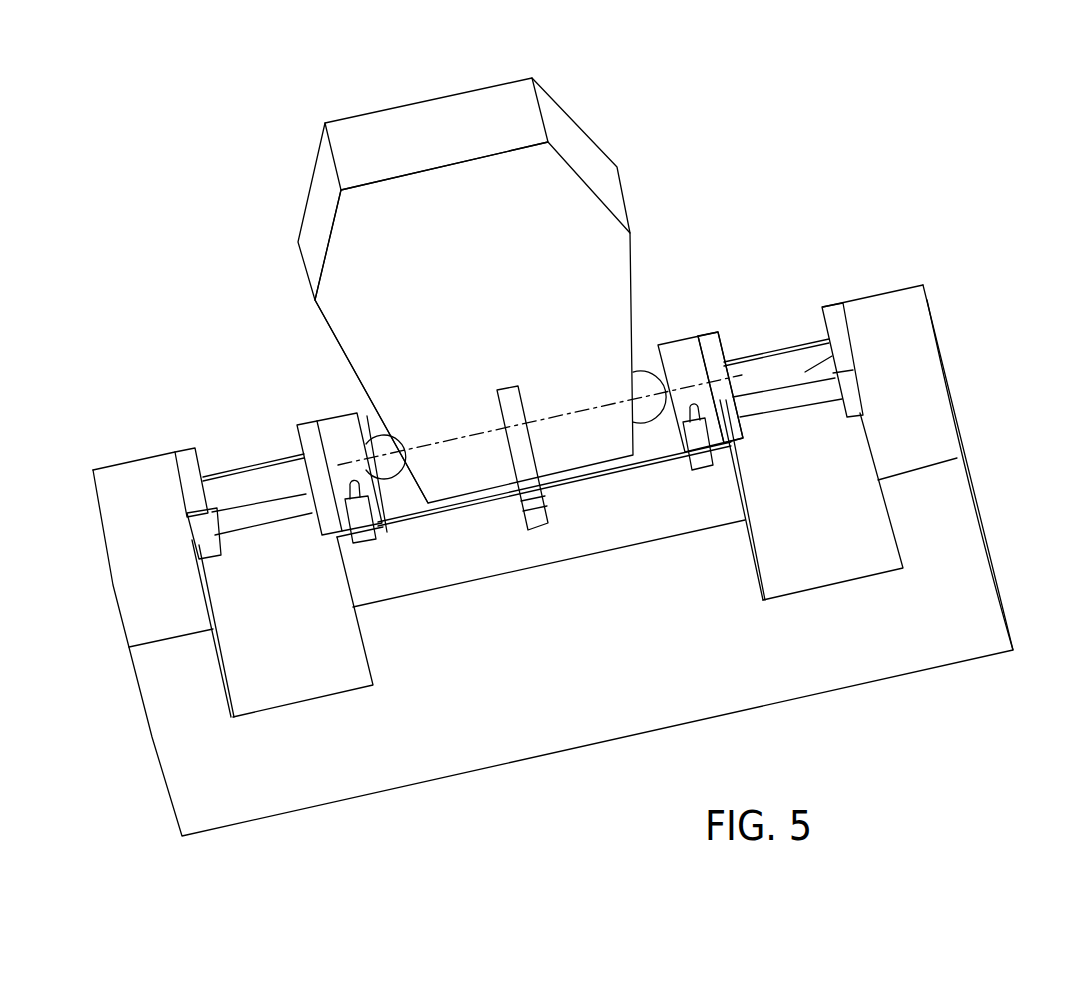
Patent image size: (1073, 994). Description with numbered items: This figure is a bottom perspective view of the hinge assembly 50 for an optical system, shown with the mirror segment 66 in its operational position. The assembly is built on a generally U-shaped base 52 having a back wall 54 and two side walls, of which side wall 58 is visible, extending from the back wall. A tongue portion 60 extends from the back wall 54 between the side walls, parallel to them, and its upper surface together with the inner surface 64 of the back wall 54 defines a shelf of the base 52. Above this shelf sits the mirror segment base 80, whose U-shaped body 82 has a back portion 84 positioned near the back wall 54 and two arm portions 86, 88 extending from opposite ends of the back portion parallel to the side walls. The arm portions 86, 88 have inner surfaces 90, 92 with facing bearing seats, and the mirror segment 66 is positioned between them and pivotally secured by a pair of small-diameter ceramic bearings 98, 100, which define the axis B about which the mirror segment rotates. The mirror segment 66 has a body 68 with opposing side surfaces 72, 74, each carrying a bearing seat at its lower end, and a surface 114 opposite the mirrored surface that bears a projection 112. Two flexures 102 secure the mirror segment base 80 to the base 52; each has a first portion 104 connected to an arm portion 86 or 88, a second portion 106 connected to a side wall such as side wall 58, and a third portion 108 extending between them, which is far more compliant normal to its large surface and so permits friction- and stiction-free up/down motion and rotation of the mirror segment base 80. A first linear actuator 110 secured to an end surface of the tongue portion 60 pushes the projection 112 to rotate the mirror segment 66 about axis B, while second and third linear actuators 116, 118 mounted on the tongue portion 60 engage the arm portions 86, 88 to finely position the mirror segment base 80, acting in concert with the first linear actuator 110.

The hinge assembly 50 is at (758, 184).
The base 52 is at (283, 817).
The back wall 54 is at (128, 545).
The side wall 58 is at (907, 427).
The tongue portion 60 is at (477, 555).
The inner surface 64 is at (278, 645).
The mirror segment 66 is at (533, 76).
The body 68 is at (365, 225).
The side surface 72 is at (328, 328).
The side surface 74 is at (632, 251).
The mirror segment base 80 is at (668, 343).
The U-shaped body 82 is at (652, 440).
The back portion 84 is at (412, 503).
The arm portion 86 is at (333, 423).
The arm portion 88 is at (700, 322).
The inner surface 90 is at (365, 447).
The inner surface 92 is at (673, 425).
The bearing 98 is at (390, 440).
The bearing 100 is at (648, 383).
The flexure 102 is at (191, 452).
The first portion 104 is at (307, 424).
The second portion 106 is at (183, 455).
The third portion 108 is at (225, 492).
The first linear actuator 110 is at (535, 522).
The projection 112 is at (523, 460).
The surface 114 is at (495, 223).
The second linear actuator 116 is at (362, 525).
The third linear actuator 118 is at (700, 452).
The axis B is at (742, 370).